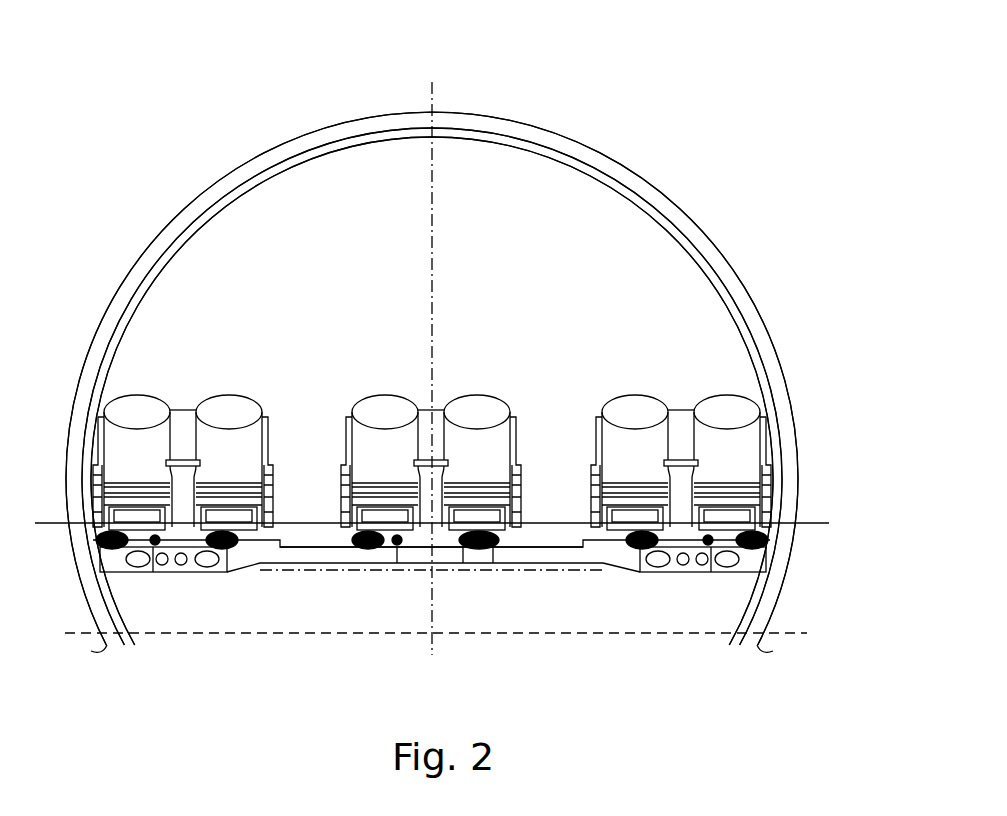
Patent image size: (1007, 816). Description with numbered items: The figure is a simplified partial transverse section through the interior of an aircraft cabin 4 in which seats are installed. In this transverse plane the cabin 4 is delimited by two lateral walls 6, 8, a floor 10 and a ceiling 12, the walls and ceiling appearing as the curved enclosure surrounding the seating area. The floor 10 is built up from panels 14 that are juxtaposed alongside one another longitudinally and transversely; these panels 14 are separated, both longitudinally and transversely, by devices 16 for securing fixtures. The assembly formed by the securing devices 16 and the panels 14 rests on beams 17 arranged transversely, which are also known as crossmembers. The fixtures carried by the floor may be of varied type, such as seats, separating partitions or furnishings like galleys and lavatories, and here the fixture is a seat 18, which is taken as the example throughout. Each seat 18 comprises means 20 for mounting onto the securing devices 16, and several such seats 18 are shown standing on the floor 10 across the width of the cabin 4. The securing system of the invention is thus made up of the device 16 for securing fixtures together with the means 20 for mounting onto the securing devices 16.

The cabin 4 is at (653, 258).
The lateral wall 6 is at (138, 300).
The lateral wall 8 is at (737, 312).
The floor 10 is at (570, 524).
The ceiling 12 is at (498, 140).
The panels 14 is at (528, 530).
The devices for securing fixtures 16 is at (120, 548).
The beams 17 is at (630, 560).
The seat 18 is at (227, 437).
The means for mounting 20 is at (780, 527).